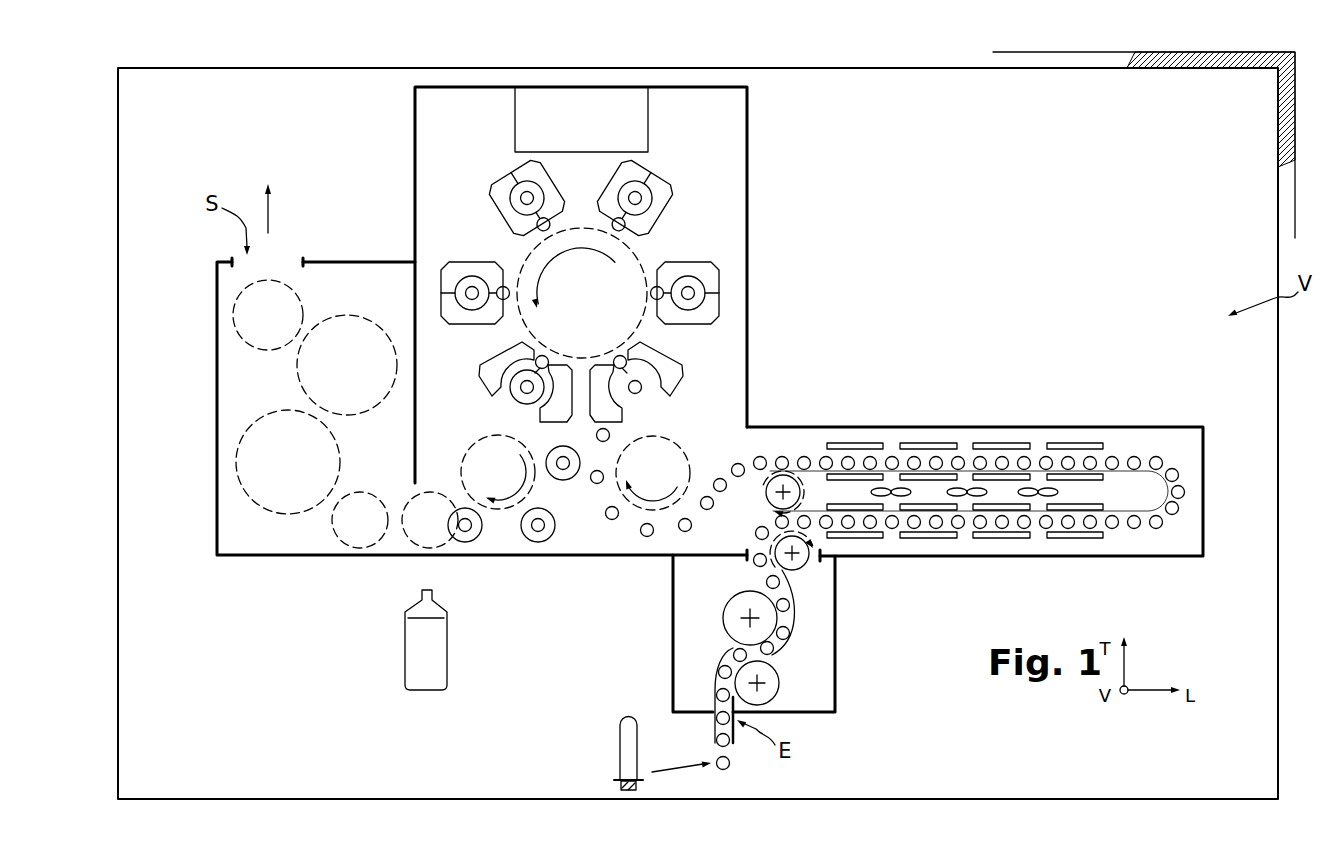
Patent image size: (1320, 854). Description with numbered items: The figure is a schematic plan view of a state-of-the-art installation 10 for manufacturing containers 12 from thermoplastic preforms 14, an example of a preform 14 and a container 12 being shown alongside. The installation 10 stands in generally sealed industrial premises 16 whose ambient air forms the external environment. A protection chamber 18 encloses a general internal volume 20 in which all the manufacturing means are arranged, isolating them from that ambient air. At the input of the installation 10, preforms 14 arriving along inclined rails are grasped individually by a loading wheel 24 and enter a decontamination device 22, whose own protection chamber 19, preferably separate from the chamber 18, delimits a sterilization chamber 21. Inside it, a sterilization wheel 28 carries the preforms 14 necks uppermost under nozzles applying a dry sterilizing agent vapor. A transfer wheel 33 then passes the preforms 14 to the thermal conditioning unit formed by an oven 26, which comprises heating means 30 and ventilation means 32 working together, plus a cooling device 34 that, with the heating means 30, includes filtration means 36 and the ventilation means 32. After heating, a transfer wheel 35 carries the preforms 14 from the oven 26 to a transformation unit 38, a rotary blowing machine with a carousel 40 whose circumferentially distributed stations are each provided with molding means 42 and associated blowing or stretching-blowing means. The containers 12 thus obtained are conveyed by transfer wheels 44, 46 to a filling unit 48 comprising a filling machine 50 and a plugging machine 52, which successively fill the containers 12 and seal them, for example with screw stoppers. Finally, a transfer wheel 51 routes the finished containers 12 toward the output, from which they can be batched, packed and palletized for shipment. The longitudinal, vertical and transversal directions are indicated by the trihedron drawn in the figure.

The installation 10 is at (934, 292).
The container 12 is at (538, 542).
The preform 14 is at (640, 390).
The industrial premises 16 is at (1175, 78).
The protection chamber 18 is at (1150, 427).
The protection chamber 19 is at (673, 683).
The internal volume 20 is at (695, 570).
The sterilization chamber 21 is at (809, 627).
The decontamination device 22 is at (692, 634).
The loading wheel 24 is at (768, 677).
The oven 26 is at (966, 428).
The sterilization wheel 28 is at (730, 613).
The heating means 30 is at (935, 443).
The ventilation means 32 is at (891, 488).
The transfer wheel 33 is at (800, 571).
The cooling device 34 is at (975, 564).
The transfer wheel 35 is at (660, 460).
The filtration means 36 is at (864, 418).
The transformation unit 38 is at (694, 243).
The carousel 40 is at (640, 328).
The molding means 42 is at (458, 270).
The transfer wheel 44 is at (492, 478).
The transfer wheel 46 is at (410, 527).
The filling unit 48 is at (232, 510).
The filling machine 50 is at (262, 475).
The transfer wheel 51 is at (245, 317).
The plugging machine 52 is at (320, 375).